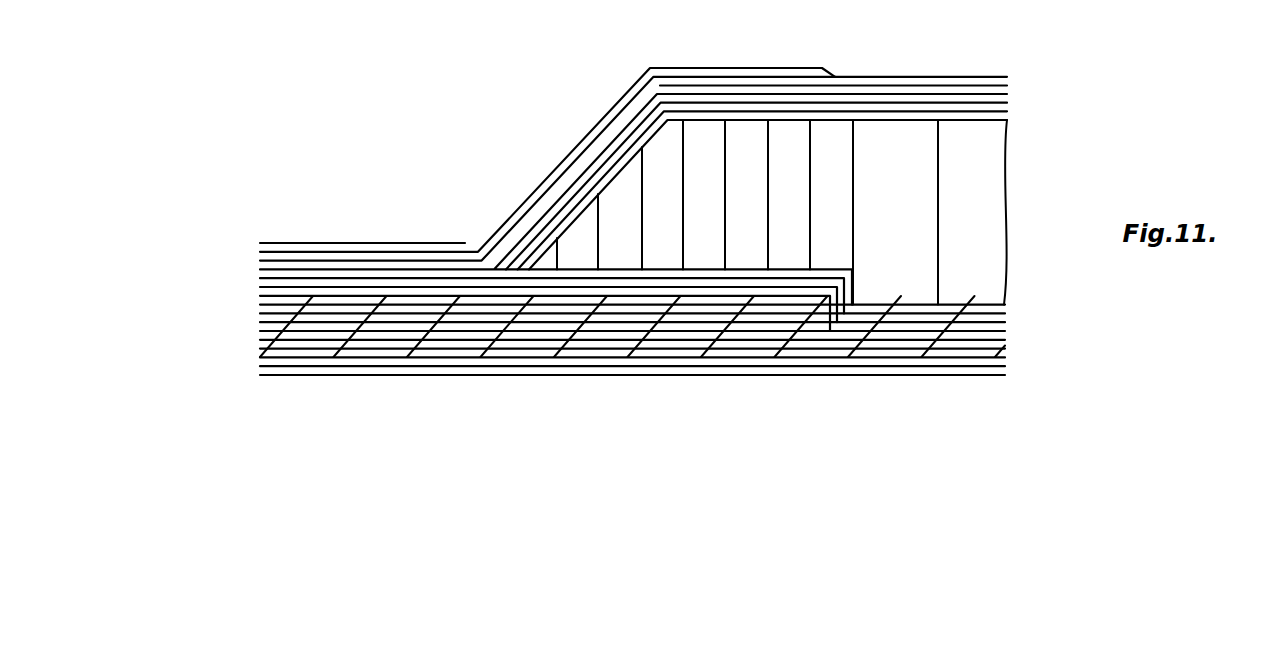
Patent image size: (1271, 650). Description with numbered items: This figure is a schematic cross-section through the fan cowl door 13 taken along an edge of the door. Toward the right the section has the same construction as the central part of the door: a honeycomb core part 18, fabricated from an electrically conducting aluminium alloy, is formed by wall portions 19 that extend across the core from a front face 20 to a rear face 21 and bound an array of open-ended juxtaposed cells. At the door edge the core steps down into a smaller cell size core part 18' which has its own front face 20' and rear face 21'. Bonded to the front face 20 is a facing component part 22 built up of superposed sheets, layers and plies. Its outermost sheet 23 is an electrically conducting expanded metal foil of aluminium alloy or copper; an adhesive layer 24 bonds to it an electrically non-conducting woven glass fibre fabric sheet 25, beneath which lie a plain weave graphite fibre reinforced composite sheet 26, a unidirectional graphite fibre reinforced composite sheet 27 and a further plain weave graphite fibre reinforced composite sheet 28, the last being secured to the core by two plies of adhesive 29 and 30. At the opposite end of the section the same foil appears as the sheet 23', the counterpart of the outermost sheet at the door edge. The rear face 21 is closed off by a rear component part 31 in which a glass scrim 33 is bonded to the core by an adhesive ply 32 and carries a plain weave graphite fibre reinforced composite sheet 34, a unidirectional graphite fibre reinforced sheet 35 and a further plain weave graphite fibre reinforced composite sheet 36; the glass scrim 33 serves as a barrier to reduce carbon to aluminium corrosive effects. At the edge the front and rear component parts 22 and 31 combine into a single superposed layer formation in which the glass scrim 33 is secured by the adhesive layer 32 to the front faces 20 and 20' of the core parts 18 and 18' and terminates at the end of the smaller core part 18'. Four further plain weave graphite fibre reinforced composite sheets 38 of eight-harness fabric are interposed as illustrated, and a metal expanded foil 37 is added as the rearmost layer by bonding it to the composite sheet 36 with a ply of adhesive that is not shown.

The fan cowl door 13 is at (505, 134).
The honeycomb core part 18 is at (1043, 212).
The smaller cell size core part 18' is at (782, 148).
The wall portions 19 is at (872, 132).
The front face 20 is at (994, 212).
The front face 20' is at (521, 222).
The rear face 21 is at (791, 194).
The rear face 21' is at (694, 148).
The facing component part 22 is at (858, 377).
The outermost sheet 23 is at (446, 389).
The bottom layer right end 23' is at (825, 390).
The adhesive layer 24 is at (261, 367).
The electrically non-conducting sheet 25 is at (258, 358).
The plain weave graphite fibre reinforced composite sheet 26 is at (258, 350).
The unidirectional graphite fibre reinforced composite sheet 27 is at (258, 341).
The plain weave graphite fibre reinforced composite sheet 28 is at (258, 332).
The adhesive ply 29 is at (258, 286).
The adhesive ply 30 is at (258, 278).
The rear component part 31 is at (958, 74).
The adhesive ply 32 is at (1008, 111).
The glass scrim 33 is at (1008, 103).
The plain weave graphite fibre reinforced composite sheet 34 is at (258, 268).
The unidirectional graphite fibre reinforced sheet 35 is at (258, 259).
The plain weave graphite fibre reinforced composite sheet 36 is at (258, 250).
The metal expanded foil 37 is at (260, 238).
The plain weave graphite fibre reinforced composite sheets 38 is at (258, 304).